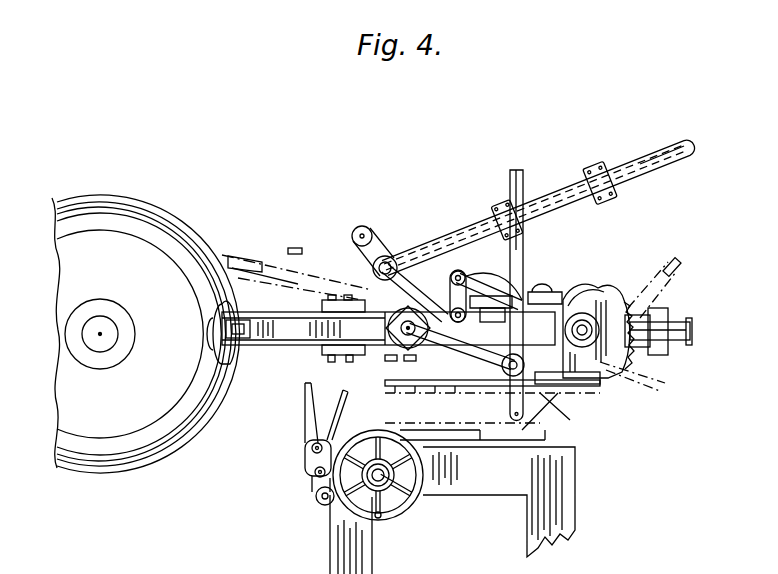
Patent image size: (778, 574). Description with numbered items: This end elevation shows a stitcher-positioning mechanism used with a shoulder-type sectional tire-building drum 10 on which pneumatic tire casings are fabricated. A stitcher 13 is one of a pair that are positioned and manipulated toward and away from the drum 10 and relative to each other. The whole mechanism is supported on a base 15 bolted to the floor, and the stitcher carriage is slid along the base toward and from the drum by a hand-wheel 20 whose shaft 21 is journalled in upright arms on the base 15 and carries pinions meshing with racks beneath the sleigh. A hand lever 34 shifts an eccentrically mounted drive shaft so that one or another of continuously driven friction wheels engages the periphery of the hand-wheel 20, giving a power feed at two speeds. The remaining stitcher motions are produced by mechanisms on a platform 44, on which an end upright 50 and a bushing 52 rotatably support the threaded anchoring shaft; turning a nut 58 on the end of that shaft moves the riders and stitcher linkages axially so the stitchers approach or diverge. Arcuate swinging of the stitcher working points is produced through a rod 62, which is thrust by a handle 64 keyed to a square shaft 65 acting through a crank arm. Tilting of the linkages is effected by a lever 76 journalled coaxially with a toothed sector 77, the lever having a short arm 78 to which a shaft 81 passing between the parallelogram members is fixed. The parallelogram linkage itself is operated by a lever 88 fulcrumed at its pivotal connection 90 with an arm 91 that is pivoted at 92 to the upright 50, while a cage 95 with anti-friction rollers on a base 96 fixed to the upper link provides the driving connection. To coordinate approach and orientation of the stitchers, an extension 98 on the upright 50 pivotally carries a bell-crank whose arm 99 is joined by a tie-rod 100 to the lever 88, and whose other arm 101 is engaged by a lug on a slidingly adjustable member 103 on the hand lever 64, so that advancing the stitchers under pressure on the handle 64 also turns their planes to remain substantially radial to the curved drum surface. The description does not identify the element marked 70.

The tire-building drum 10 is at (190, 272).
The stitcher 13 is at (208, 333).
The base 15 is at (566, 478).
The hand-wheel 20 is at (410, 512).
The shaft 21 is at (392, 472).
The handle portion 34 is at (310, 394).
The platform 44 is at (496, 378).
The end upright 50 is at (392, 372).
The bushing 52 is at (390, 382).
The nut 58 is at (392, 348).
The rod 62 is at (456, 272).
The handle 64 is at (662, 160).
The square shaft 65 is at (400, 270).
The arm 70 is at (388, 282).
The lever 76 is at (680, 338).
The toothed sector 77 is at (622, 372).
The short arm 78 is at (590, 298).
The shaft 81 is at (596, 382).
The lever 88 is at (524, 178).
The pivotal connection 90 is at (560, 395).
The arm 91 is at (476, 362).
The pivot 92 is at (386, 384).
The cage 95 is at (536, 282).
The base 96 is at (576, 290).
The extension 98 is at (445, 214).
The arm 99 is at (486, 282).
The tie-rod 100 is at (540, 288).
The arm 101 is at (496, 280).
The slidingly adjustable member 103 is at (500, 208).